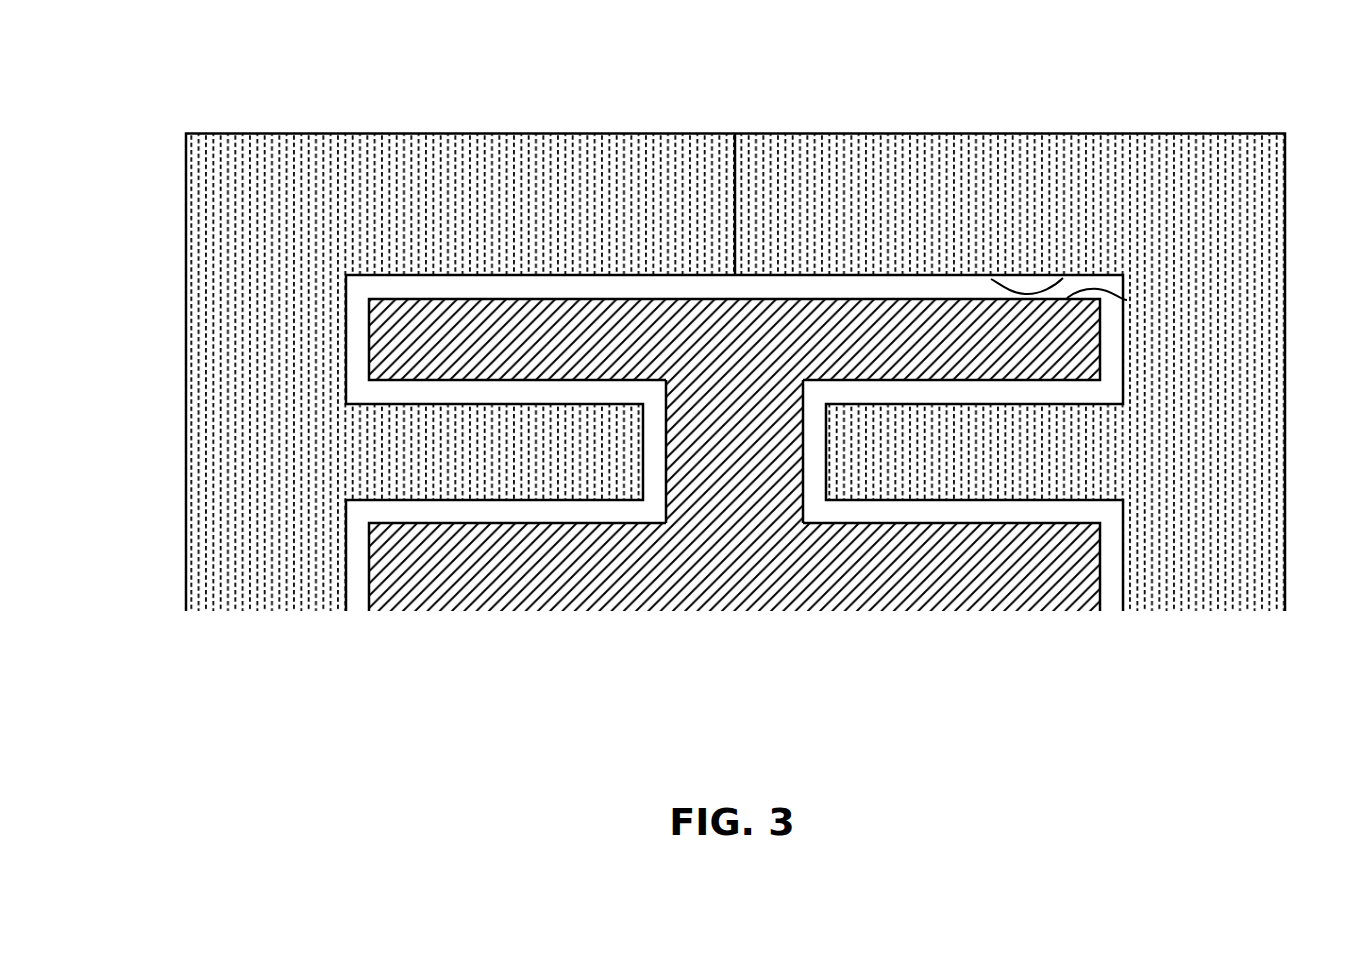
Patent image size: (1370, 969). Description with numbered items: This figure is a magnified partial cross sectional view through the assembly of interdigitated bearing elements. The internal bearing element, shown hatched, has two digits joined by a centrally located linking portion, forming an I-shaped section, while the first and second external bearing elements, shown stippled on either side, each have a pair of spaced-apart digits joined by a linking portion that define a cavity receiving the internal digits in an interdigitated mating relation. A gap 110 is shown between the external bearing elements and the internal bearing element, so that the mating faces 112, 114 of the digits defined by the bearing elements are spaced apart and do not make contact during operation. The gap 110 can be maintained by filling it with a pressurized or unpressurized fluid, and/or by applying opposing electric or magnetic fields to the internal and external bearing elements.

The gap 110 is at (632, 288).
The mating face 112 is at (1063, 278).
The mating face 114 is at (1127, 300).